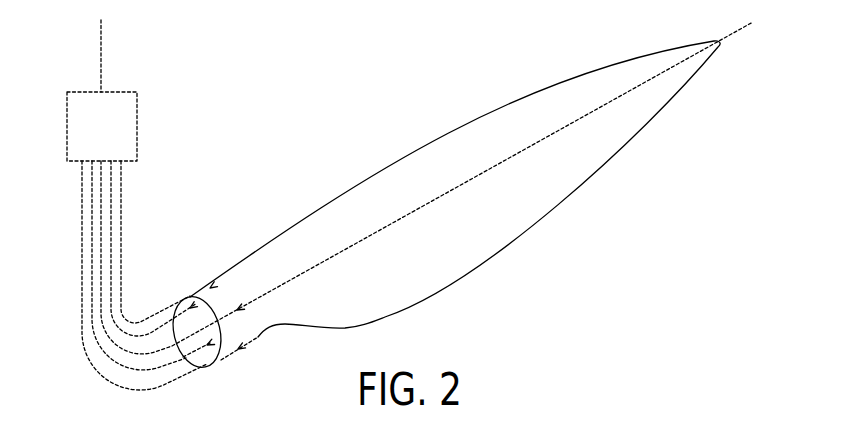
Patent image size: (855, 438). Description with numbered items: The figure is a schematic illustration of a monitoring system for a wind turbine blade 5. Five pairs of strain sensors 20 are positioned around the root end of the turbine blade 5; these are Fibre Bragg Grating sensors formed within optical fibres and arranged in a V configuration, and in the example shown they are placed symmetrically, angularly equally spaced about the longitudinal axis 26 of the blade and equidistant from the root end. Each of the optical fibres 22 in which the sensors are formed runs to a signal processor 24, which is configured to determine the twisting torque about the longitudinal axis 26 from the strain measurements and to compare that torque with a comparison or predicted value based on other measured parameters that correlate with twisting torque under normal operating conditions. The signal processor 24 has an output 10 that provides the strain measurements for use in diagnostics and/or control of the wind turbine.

The wind turbine blade 5 is at (527, 222).
The output 10 is at (102, 60).
The strain sensors 20 is at (214, 288).
The optical fibres 22 is at (81, 216).
The signal processor 24 is at (138, 108).
The longitudinal axis 26 is at (746, 28).